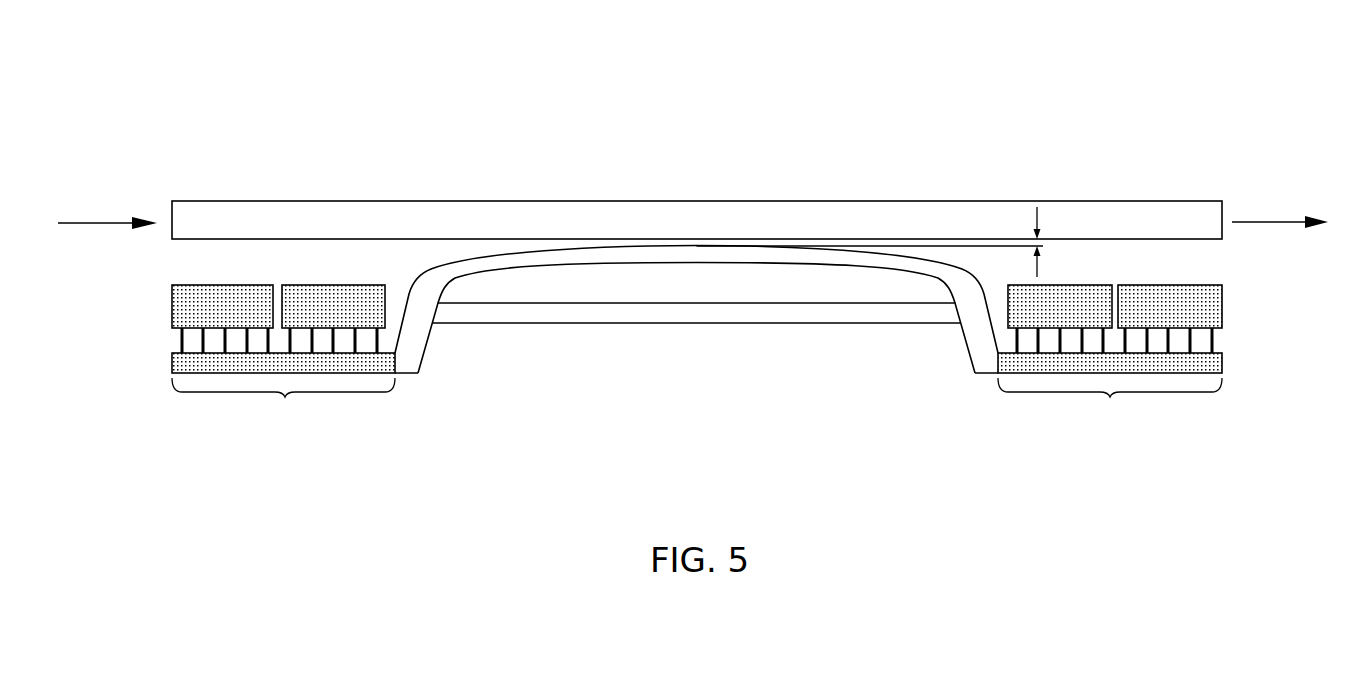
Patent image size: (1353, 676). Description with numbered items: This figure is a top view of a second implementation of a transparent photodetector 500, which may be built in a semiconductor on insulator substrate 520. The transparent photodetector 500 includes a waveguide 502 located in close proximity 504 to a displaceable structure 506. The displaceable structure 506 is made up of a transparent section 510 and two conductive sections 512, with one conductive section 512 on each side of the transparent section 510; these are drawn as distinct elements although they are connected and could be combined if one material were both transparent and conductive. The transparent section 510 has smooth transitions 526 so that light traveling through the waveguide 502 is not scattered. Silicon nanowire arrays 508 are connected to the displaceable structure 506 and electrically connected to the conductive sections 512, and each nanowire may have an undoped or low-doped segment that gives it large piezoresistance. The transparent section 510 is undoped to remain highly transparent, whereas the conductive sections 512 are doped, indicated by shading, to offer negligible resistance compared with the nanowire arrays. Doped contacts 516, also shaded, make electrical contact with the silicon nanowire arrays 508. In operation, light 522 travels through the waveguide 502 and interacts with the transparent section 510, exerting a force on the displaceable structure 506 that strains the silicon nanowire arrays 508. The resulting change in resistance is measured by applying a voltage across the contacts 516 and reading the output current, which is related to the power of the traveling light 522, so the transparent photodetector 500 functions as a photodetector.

The transparent photodetector 500 is at (272, 107).
The waveguide 502 is at (990, 218).
The close proximity 504 is at (1058, 246).
The displaceable structure 506 is at (427, 312).
The silicon nanowire arrays 508 is at (182, 337).
The transparent section 510 is at (558, 258).
The conductive sections 512 is at (285, 397).
The contacts 516 is at (292, 290).
The semiconductor on insulator substrate 520 is at (285, 515).
The light 522 is at (100, 220).
The smooth transitions 526 is at (433, 270).